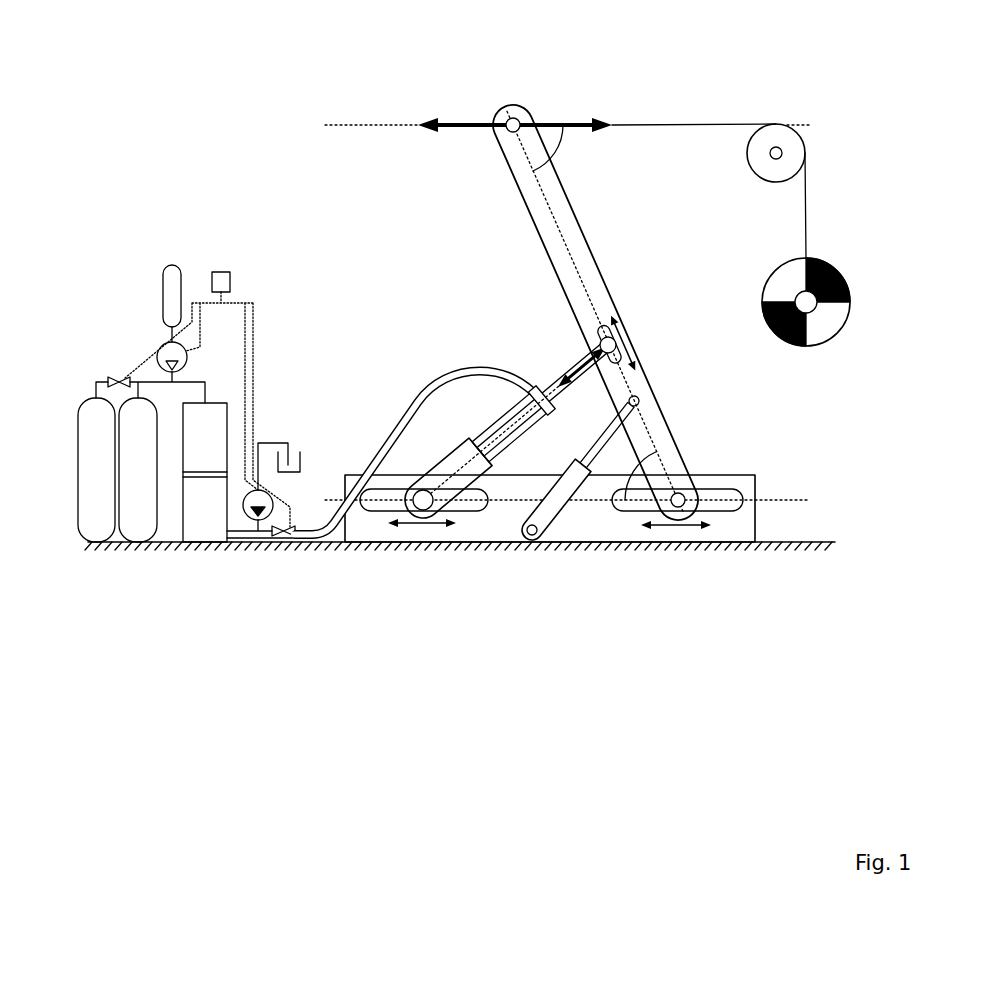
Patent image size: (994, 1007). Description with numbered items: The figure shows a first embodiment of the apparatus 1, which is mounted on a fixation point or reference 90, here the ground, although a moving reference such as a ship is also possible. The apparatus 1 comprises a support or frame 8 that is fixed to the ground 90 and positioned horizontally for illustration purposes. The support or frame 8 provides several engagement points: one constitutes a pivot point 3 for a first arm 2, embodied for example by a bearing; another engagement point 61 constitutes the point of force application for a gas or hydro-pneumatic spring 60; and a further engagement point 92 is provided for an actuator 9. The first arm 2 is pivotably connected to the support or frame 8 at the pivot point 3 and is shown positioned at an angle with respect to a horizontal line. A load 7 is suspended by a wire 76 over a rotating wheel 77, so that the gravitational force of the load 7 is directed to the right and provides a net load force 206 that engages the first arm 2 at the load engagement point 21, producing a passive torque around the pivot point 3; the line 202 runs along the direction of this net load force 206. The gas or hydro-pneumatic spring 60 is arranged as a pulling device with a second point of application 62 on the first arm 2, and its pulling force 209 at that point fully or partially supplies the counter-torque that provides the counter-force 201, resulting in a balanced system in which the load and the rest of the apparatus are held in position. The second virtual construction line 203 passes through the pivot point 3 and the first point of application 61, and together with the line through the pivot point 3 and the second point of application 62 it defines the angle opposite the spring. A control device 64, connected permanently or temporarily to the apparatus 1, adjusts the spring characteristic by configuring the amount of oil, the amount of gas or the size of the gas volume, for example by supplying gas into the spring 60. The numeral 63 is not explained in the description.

The apparatus 1 is at (166, 140).
The first arm 2 is at (596, 352).
The pivot point 3 is at (676, 504).
The load 7 is at (827, 262).
The support or frame 8 is at (588, 473).
The actuator 9 is at (590, 459).
The load engagement point 21 is at (523, 111).
The gas or hydro-pneumatic spring 60 is at (334, 411).
The first point of application 61 is at (421, 503).
The second point of application 62 is at (620, 350).
The hydraulic hose 63 is at (331, 519).
The control device 64 is at (211, 274).
The wire 76 is at (701, 123).
The rotating wheel 77 is at (778, 136).
The fixation point or reference 90 is at (773, 546).
The engagement point 92 is at (529, 533).
The counter-force 201 is at (451, 122).
The line along the direction of the net load force 202 is at (353, 124).
The second virtual construction line 203 is at (781, 497).
The net load force 206 is at (589, 117).
The pulling force 209 is at (523, 418).